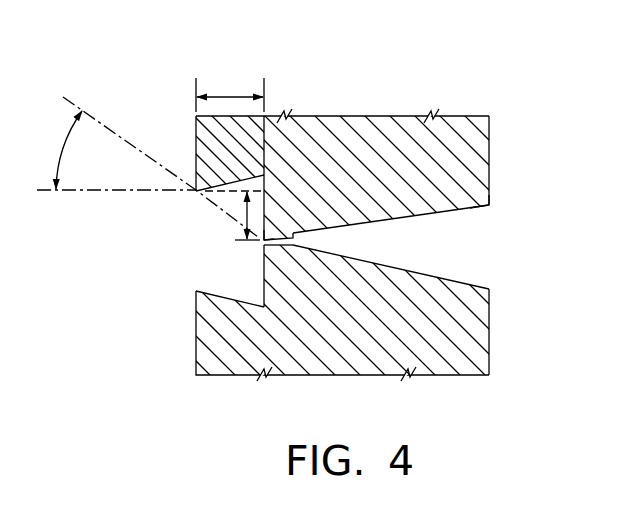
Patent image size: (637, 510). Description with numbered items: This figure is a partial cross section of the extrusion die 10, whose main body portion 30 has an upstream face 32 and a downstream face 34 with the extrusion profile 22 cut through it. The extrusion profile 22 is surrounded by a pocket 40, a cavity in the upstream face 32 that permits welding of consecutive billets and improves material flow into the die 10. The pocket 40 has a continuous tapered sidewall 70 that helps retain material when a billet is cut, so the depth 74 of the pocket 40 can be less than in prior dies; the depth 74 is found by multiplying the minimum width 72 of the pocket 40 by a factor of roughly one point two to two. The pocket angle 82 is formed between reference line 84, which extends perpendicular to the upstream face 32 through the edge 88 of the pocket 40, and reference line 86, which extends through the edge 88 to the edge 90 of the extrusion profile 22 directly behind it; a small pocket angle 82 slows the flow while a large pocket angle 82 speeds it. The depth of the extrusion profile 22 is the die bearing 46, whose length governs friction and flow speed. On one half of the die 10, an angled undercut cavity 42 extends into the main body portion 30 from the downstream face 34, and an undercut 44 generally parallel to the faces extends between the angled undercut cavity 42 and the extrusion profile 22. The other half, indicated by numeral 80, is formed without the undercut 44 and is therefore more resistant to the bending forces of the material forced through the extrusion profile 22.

The extrusion die 10 is at (364, 99).
The extrusion profile 22 is at (288, 253).
The main body portion 30 is at (395, 133).
The upstream face 32 is at (196, 349).
The downstream face 34 is at (490, 362).
The pocket 40 is at (194, 283).
The angled undercut cavity 42 is at (465, 209).
The undercut 44 is at (296, 238).
The die bearing 46 is at (284, 239).
The tapered sidewall 70 is at (225, 297).
The minimum width 72 is at (240, 213).
The depth 74 is at (228, 92).
The half without the undercut 80 is at (425, 276).
The pocket angle 82 is at (58, 163).
The reference line 84 is at (68, 192).
The reference line 86 is at (125, 140).
The edge of the pocket 88 is at (195, 193).
The edge of the extrusion profile 90 is at (263, 243).